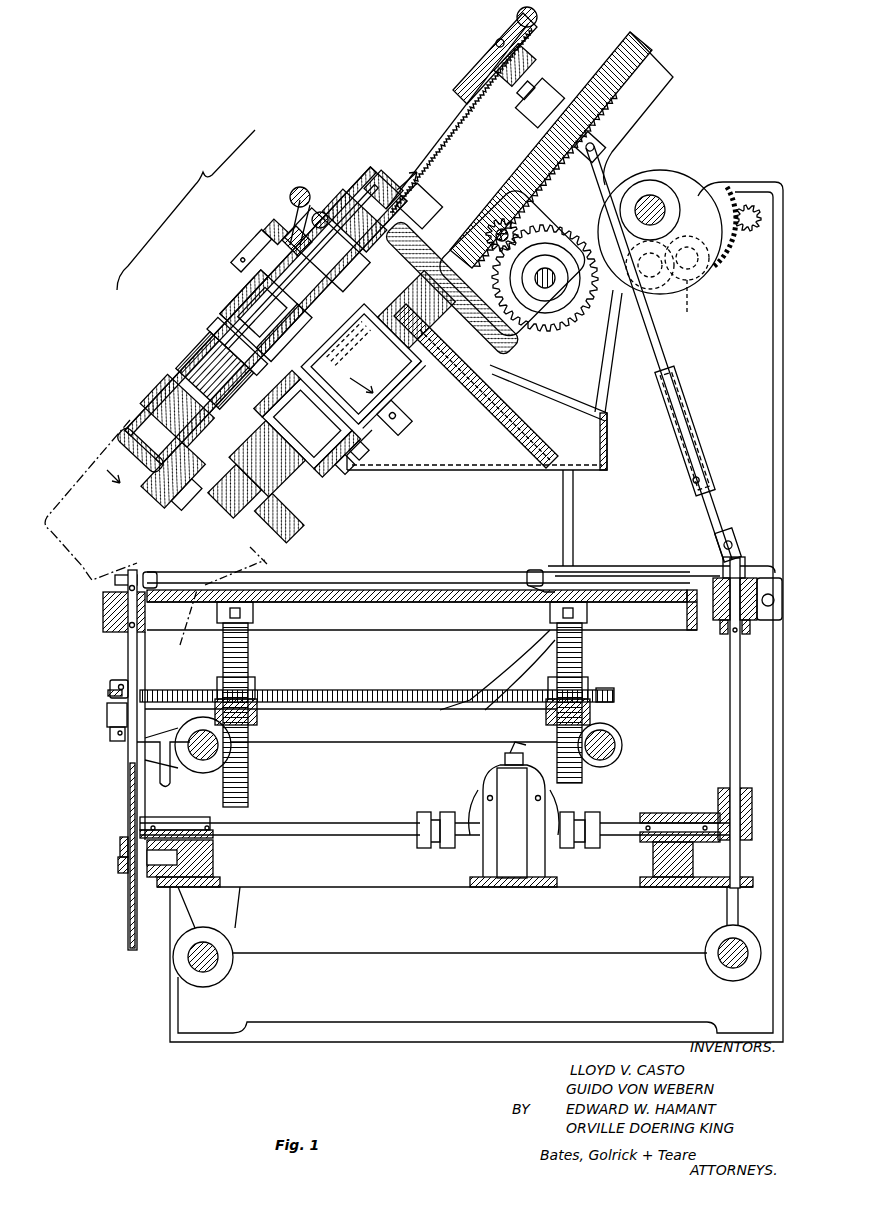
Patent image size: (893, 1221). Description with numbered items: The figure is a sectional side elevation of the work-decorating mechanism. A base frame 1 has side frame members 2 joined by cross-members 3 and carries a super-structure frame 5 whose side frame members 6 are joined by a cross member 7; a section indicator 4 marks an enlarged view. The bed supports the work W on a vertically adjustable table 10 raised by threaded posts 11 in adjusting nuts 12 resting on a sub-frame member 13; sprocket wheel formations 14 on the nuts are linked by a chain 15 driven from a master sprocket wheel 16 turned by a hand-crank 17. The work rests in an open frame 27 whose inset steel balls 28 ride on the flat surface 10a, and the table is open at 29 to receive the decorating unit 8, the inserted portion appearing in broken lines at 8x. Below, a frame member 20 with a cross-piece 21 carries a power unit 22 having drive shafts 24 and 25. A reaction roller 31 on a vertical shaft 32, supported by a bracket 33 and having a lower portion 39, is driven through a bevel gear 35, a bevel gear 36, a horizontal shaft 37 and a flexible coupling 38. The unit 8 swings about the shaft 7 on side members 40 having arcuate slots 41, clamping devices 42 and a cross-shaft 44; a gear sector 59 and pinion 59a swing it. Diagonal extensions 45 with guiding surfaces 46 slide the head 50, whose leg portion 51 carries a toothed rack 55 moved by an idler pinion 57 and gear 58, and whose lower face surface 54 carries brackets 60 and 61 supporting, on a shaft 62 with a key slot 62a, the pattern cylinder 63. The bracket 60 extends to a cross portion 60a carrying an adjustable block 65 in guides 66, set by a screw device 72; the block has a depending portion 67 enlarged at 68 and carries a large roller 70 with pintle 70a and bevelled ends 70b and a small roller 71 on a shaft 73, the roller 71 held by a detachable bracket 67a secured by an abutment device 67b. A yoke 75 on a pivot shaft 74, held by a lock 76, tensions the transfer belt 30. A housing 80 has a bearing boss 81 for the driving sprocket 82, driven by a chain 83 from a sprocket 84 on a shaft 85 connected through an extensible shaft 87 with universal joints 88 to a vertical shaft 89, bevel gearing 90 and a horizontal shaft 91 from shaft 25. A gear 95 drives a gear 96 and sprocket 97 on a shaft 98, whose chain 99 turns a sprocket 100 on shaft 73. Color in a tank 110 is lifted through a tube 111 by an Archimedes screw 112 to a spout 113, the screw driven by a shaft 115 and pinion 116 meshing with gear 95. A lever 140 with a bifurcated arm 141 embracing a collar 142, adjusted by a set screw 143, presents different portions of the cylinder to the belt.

The base frame 1 is at (787, 653).
The side frame member 2 is at (242, 482).
The cross-member 3 is at (212, 965).
The section line 4 is at (367, 391).
The super-structure frame 5 is at (787, 283).
The side frame member 6 is at (736, 405).
The cross member 7 is at (660, 200).
The work decorating mechanism unit 8 is at (186, 210).
The section line 8x is at (367, 628).
The vertically adjustable table 10 is at (460, 597).
The flat surface 10a is at (432, 580).
The threaded post 11 is at (248, 657).
The adjusting nut 12 is at (250, 685).
The sub-frame member 13 is at (440, 755).
The sprocket wheel formation 14 is at (612, 700).
The continuous chain 15 is at (415, 690).
The master sprocket wheel 16 is at (110, 685).
The hand-crank 17 is at (145, 745).
The frame member 20 is at (325, 887).
The cross-piece 21 is at (465, 880).
The power unit 22 is at (500, 790).
The drive shaft 24 is at (466, 815).
The drive shaft 25 is at (572, 848).
The open frame 27 is at (538, 570).
The inset steel ball 28 is at (530, 592).
The open side of table 29 is at (312, 590).
The transfer belt 30 is at (245, 520).
The reaction roller 31 is at (145, 572).
The vertical shaft 32 is at (128, 653).
The bracket 33 is at (195, 853).
The bevel gear 35 is at (120, 840).
The bevel gear 36 is at (168, 812).
The horizontal shaft 37 is at (302, 822).
The flexible coupling 38 is at (425, 848).
The rod 39 is at (128, 905).
The side member 40 is at (670, 140).
The arcuate slot 41 is at (691, 303).
The clamping device 42 is at (665, 250).
The cross-shaft 44 is at (545, 290).
The diagonal extension 45 is at (465, 235).
The guiding surface 46 is at (470, 262).
The head 50 is at (372, 200).
The leg portion 51 is at (500, 170).
The lower face surface 54 is at (414, 210).
The toothed rack 55 is at (565, 178).
The pinion 57 is at (512, 225).
The gear 58 is at (575, 330).
The gear sector 59 is at (728, 262).
The pinion 59a is at (745, 233).
The bracket 60 is at (400, 240).
The cross portion 60a is at (163, 455).
The bracket 61 is at (445, 410).
The shaft 62 is at (405, 430).
The key slot 62a is at (270, 250).
The pattern cylinder 63 is at (384, 340).
The adjustable block 65 is at (205, 380).
The guide 66 is at (185, 472).
The depending portion 67 is at (255, 505).
The detachable bracket 67a is at (285, 545).
The abutment device 67b is at (328, 508).
The enlarged end 68 is at (358, 492).
The large roller 70 is at (307, 423).
The roller pintle 70a is at (360, 462).
The bevelled end 70b is at (330, 420).
The small roller 71 is at (225, 480).
The screw device 72 is at (178, 501).
The shaft 73 is at (135, 425).
The pivot shaft 74 is at (335, 496).
The yoke member 75 is at (370, 440).
The lock 76 is at (355, 480).
The housing 80 is at (170, 398).
The bearing boss 81 is at (268, 300).
The pattern roll driving sprocket 82 is at (327, 250).
The chain 83 is at (460, 135).
The sprocket 84 is at (545, 70).
The shaft 85 is at (535, 45).
The extensible shaft 87 is at (668, 340).
The universal joint 88 is at (605, 127).
The vertical shaft 89 is at (730, 675).
The bevel gearing 90 is at (718, 800).
The horizontal shaft 91 is at (630, 825).
The gear 95 is at (255, 300).
The gear 96 is at (215, 360).
The sprocket 97 is at (248, 320).
The shaft 98 is at (225, 340).
The chain 99 is at (190, 385).
The sprocket 100 is at (148, 415).
The tank 110 is at (490, 478).
The tube 111 is at (500, 402).
The Archimedes screw 112 is at (538, 430).
The spout 113 is at (375, 340).
The shaft 115 is at (340, 215).
The pinion 116 is at (387, 207).
The lever 140 is at (295, 200).
The bifurcated arm 141 is at (285, 235).
The collar 142 is at (245, 272).
The set screw 143 is at (300, 187).
The work W is at (407, 572).